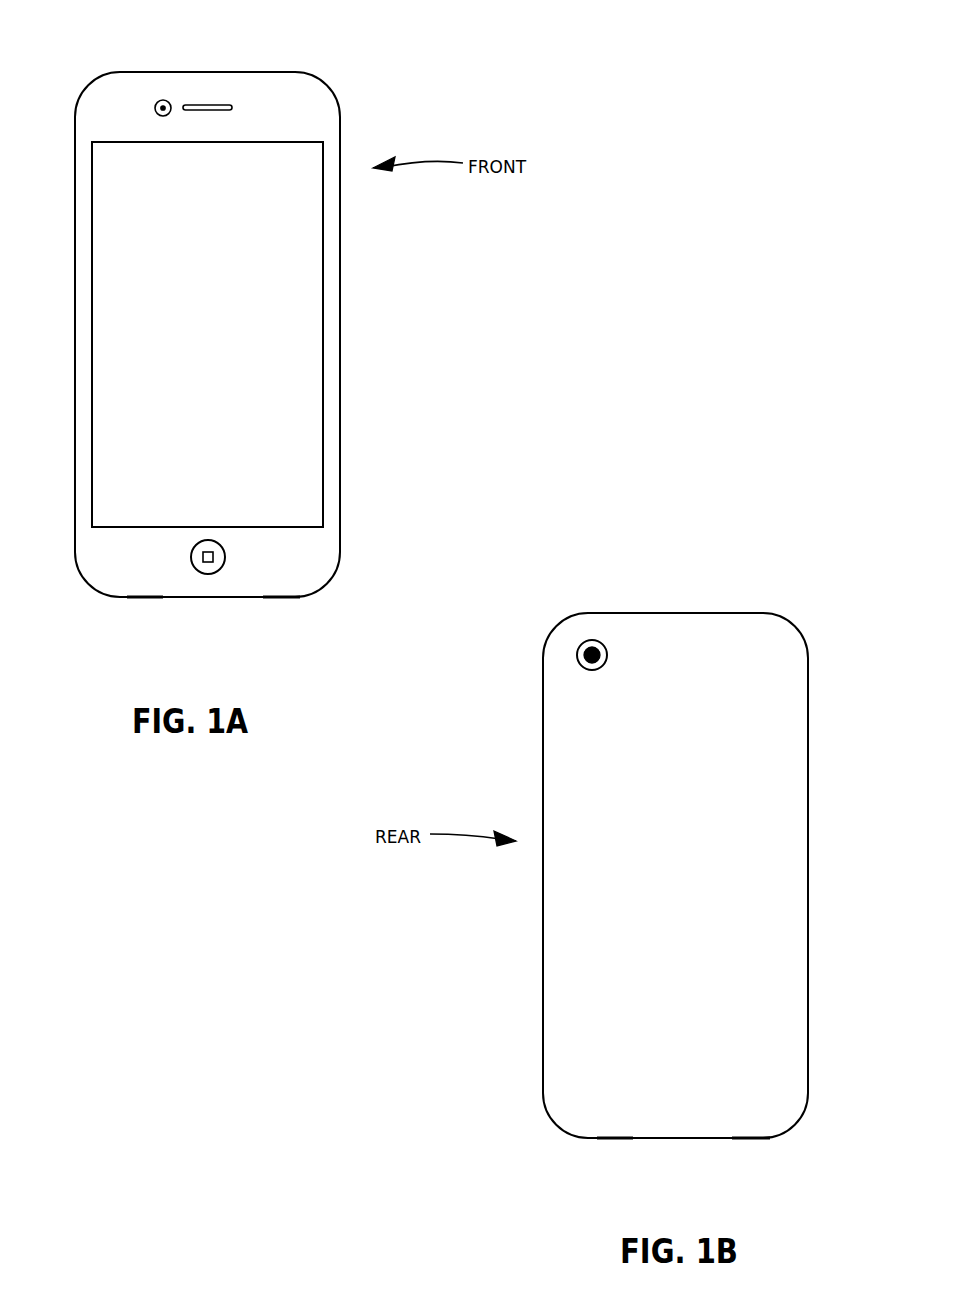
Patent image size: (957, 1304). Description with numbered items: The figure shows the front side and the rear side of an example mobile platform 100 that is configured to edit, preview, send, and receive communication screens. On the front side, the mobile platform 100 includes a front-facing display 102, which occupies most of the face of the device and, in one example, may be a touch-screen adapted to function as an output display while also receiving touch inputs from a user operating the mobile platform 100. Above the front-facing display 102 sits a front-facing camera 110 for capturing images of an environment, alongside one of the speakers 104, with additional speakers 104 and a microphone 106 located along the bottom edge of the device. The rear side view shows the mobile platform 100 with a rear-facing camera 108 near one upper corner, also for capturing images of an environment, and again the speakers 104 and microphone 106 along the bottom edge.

In FIG. 1A, the mobile platform 100 is at (323, 88).
In FIG. 1B, the mobile platform 100 is at (800, 634).
In FIG. 1A, the front-facing display 102 is at (303, 320).
In FIG. 1A, the speakers 104 is at (205, 105).
In FIG. 1B, the speakers 104 is at (617, 1139).
In FIG. 1A, the microphone 106 is at (150, 599).
In FIG. 1B, the microphone 106 is at (745, 1139).
In FIG. 1B, the rear-facing camera 108 is at (607, 645).
In FIG. 1A, the front-facing camera 110 is at (155, 105).